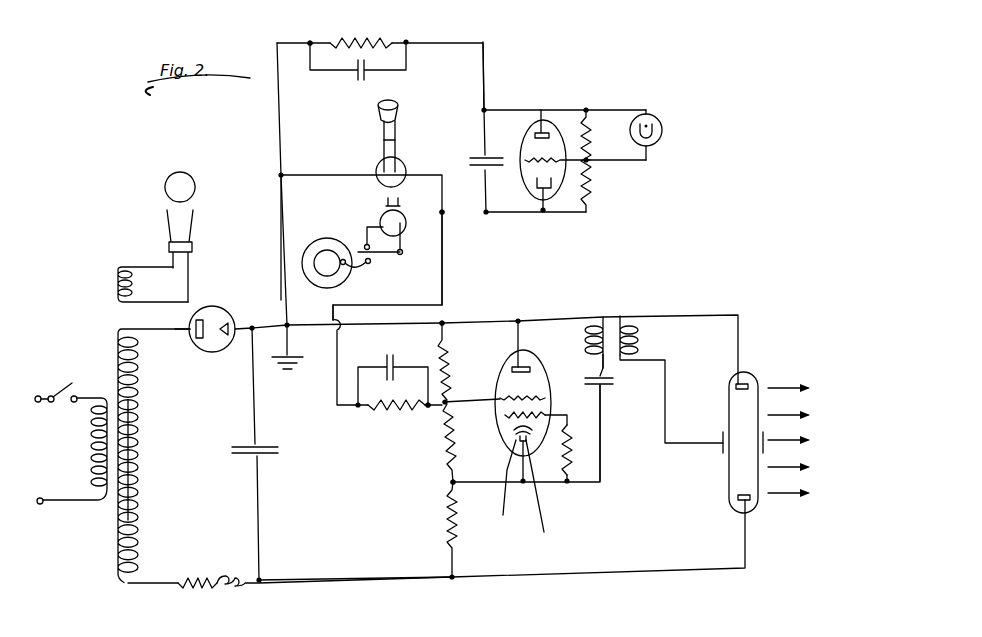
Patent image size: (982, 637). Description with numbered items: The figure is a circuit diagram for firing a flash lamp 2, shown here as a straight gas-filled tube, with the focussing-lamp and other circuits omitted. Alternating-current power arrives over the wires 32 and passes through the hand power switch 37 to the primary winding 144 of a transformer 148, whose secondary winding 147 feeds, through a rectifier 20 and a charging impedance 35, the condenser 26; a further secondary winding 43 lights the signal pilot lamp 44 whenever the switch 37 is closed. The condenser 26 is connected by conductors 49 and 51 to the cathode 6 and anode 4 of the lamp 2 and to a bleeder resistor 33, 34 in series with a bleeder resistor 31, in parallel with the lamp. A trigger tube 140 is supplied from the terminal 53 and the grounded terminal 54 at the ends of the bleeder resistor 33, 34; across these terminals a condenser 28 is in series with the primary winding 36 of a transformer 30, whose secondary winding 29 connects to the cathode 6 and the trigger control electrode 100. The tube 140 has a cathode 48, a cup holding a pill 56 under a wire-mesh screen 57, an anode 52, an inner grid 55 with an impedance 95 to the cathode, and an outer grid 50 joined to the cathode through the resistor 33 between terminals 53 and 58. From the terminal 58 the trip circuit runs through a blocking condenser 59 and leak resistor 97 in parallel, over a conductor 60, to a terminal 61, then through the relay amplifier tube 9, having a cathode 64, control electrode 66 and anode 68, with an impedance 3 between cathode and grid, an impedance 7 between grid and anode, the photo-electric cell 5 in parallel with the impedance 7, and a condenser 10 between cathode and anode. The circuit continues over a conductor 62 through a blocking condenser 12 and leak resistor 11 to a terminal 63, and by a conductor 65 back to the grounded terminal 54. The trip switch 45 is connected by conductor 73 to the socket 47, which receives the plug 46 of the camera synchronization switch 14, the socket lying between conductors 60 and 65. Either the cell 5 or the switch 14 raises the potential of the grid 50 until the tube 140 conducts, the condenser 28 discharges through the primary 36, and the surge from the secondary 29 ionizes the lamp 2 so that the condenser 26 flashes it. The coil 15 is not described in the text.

The flash lamp 2 is at (726, 478).
The impedance 3 is at (594, 200).
The anode 4 is at (756, 501).
The photo-electric cell 5 is at (663, 131).
The cathode 6 is at (752, 386).
The impedance 7 is at (593, 144).
The relay amplifier tube 9 is at (559, 140).
The condenser 10 is at (470, 158).
The leak resistor 11 is at (376, 38).
The blocking condenser 12 is at (355, 75).
The camera shutter synchronization switch 14 is at (383, 265).
The coil 15 is at (318, 280).
The rectifier 20 is at (226, 310).
The condenser 26 is at (247, 470).
The condenser 28 is at (605, 387).
The secondary winding 29 is at (639, 340).
The transformer 30 is at (612, 360).
The bleeder resistor 31 is at (440, 522).
The wires 32 is at (70, 505).
The bleeder resistor 33 is at (442, 446).
The bleeder resistor 34 is at (452, 352).
The charging impedance 35 is at (205, 596).
The primary winding 36 is at (590, 340).
The hand power switch 37 is at (60, 391).
The secondary winding 43 is at (113, 288).
The signal pilot lamp 44 is at (180, 200).
The trip switch 45 is at (393, 104).
The plug 46 is at (400, 224).
The socket 47 is at (401, 160).
The cathode 48 is at (556, 450).
The conductor 49 is at (342, 585).
The grid 50 is at (505, 398).
The conductor 51 is at (314, 330).
The anode 52 is at (512, 366).
The terminal 53 is at (456, 486).
The grounded terminal 54 is at (446, 322).
The grid 55 is at (556, 396).
The pill 56 is at (540, 496).
The wire-mesh screen 57 is at (501, 491).
The terminal 58 is at (428, 408).
The blocking condenser 59 is at (394, 358).
The conductor 60 is at (450, 244).
The terminal 61 is at (446, 212).
The conductor 62 is at (487, 88).
The terminal 63 is at (308, 40).
The cathode 64 is at (552, 186).
The conductor 65 is at (329, 180).
The control electrode 66 is at (530, 164).
The anode 68 is at (546, 118).
The conductor 73 is at (378, 138).
The impedance 95 is at (603, 451).
The leak resistor 97 is at (385, 413).
The trigger control electrode 100 is at (721, 441).
The trigger tube 140 is at (506, 435).
The primary winding 144 is at (67, 449).
The secondary winding 147 is at (140, 450).
The transformer 148 is at (110, 372).